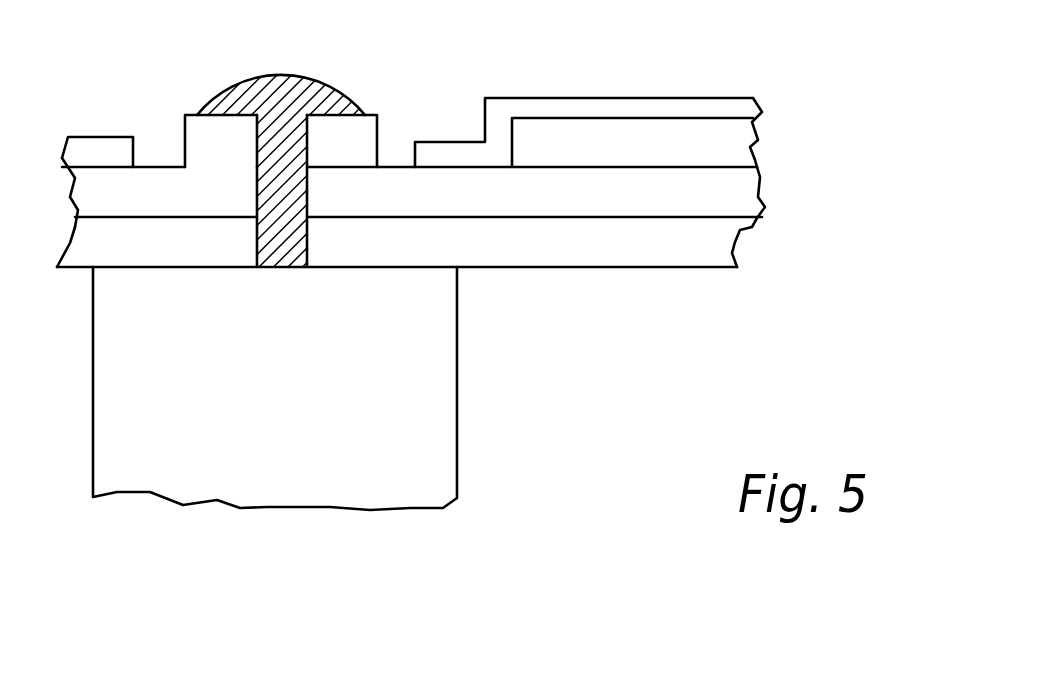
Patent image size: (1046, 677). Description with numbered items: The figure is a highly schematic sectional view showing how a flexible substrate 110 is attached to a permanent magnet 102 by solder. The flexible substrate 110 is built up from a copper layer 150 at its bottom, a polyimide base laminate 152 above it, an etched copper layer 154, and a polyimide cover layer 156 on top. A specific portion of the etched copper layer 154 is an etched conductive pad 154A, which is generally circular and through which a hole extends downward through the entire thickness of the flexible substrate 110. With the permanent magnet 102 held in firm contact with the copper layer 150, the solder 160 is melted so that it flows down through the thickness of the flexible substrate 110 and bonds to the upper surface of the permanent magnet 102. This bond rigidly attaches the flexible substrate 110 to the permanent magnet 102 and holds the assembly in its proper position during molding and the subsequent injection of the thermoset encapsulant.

The permanent magnet 102 is at (445, 457).
The flexible substrate 110 is at (500, 187).
The copper layer 150 is at (538, 255).
The polyimide base laminate 152 is at (643, 203).
The etched copper layer 154 is at (733, 140).
The etched conductive pad 154A is at (366, 132).
The polyimide cover layer 156 is at (572, 105).
The solder 160 is at (240, 85).